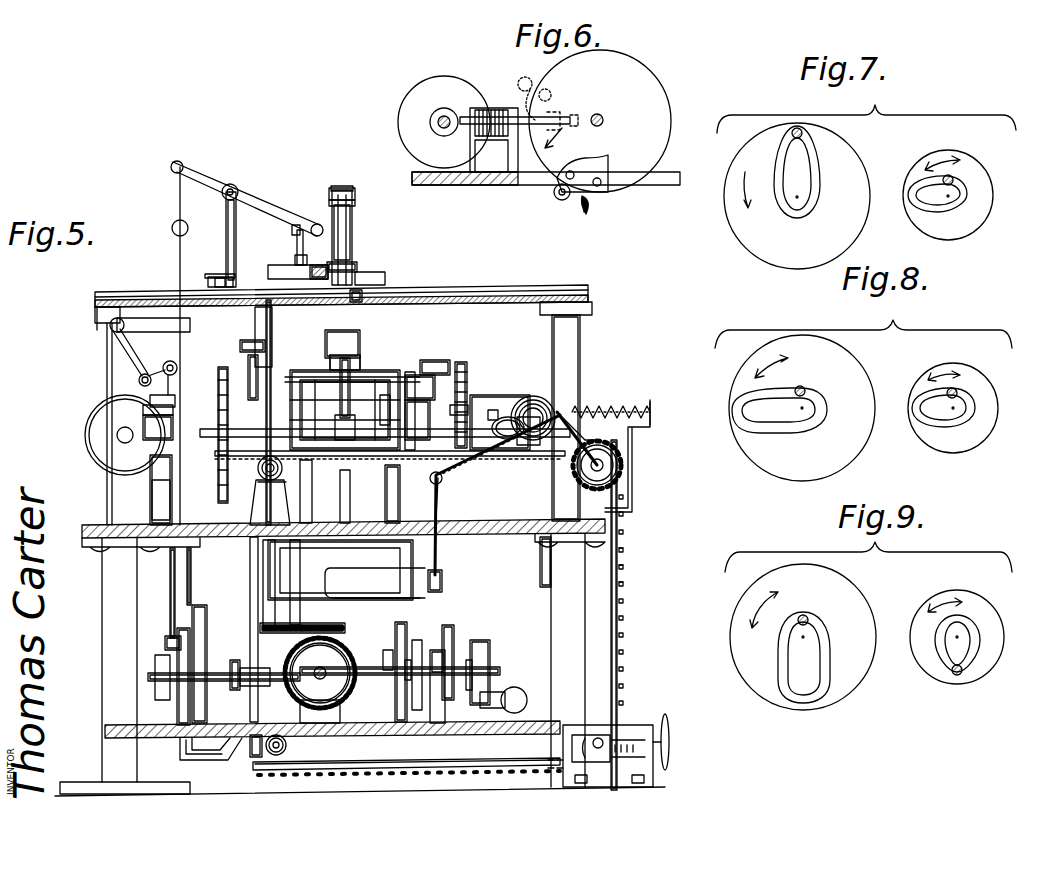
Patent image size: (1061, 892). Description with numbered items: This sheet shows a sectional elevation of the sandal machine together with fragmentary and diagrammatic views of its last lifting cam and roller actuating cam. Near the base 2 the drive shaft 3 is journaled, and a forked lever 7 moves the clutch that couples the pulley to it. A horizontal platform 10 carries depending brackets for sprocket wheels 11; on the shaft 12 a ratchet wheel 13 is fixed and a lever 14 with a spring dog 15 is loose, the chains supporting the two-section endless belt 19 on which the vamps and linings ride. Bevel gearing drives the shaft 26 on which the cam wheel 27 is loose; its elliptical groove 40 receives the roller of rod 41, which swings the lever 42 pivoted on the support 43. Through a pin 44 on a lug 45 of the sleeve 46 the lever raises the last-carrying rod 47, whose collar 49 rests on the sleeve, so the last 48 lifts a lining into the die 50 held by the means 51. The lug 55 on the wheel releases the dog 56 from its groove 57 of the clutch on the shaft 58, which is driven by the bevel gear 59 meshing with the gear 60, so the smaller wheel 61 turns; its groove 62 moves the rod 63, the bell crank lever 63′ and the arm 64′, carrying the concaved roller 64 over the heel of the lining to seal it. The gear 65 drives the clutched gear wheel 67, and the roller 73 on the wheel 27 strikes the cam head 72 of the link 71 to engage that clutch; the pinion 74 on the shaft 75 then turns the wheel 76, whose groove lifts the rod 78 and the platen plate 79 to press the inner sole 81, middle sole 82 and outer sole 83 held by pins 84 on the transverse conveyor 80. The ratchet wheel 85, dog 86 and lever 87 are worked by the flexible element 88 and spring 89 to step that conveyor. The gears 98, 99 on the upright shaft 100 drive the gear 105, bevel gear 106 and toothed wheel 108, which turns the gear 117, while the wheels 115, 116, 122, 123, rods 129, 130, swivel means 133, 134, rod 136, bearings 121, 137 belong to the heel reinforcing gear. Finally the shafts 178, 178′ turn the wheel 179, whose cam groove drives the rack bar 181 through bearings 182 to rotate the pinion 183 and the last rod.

In FIG. 5, the base 2 is at (252, 752).
In FIG. 5, the shaft 3 is at (381, 652).
In FIG. 5, the lever 7 is at (582, 335).
In FIG. 5, the horizontal platform 10 is at (530, 540).
In FIG. 5, the sprocket wheels 11 is at (272, 582).
In FIG. 5, the shaft 12 is at (246, 376).
In FIG. 5, the ratchet wheel 13 is at (222, 396).
In FIG. 5, the lever 14 is at (262, 372).
In FIG. 5, the spring influenced dog 15 is at (272, 362).
In FIG. 5, the endless belt 19 is at (370, 374).
In FIG. 6, the shaft 26 is at (605, 119).
In FIG. 5, the wheel 27 is at (207, 640).
In FIG. 6, the wheel 27 is at (615, 72).
In FIG. 7, the wheel 27 is at (748, 238).
In FIG. 8, the wheel 27 is at (840, 364).
In FIG. 9, the wheel 27 is at (860, 602).
In FIG. 7, the elliptical groove 40 is at (818, 172).
In FIG. 8, the elliptical groove 40 is at (788, 432).
In FIG. 9, the elliptical groove 40 is at (828, 656).
In FIG. 5, the rod 41 is at (192, 604).
In FIG. 7, the rod 41 is at (794, 128).
In FIG. 8, the rod 41 is at (802, 386).
In FIG. 9, the rod 41 is at (806, 616).
In FIG. 5, the lever 42 is at (243, 172).
In FIG. 5, the support 43 is at (237, 246).
In FIG. 5, the pin or roller 44 is at (322, 226).
In FIG. 5, the lug 45 is at (322, 222).
In FIG. 5, the sleeve 46 is at (355, 232).
In FIG. 5, the rod 47 is at (355, 192).
In FIG. 5, the last 48 is at (462, 364).
In FIG. 5, the collar 49 is at (355, 194).
In FIG. 5, the die 50 is at (360, 350).
In FIG. 5, the means 51 is at (362, 346).
In FIG. 6, the lug 55 is at (560, 120).
In FIG. 6, the spring influenced dog or rod 56 is at (548, 110).
In FIG. 5, the groove 57 is at (236, 662).
In FIG. 5, the shaft 58 is at (150, 677).
In FIG. 6, the shaft 58 is at (452, 118).
In FIG. 5, the beveled gear 59 is at (290, 690).
In FIG. 5, the gear 60 is at (318, 722).
In FIG. 5, the wheel 61 is at (182, 642).
In FIG. 6, the wheel 61 is at (430, 98).
In FIG. 7, the wheel 61 is at (990, 192).
In FIG. 8, the wheel 61 is at (990, 416).
In FIG. 9, the wheel 61 is at (992, 654).
In FIG. 7, the elliptical groove 62 is at (960, 208).
In FIG. 8, the elliptical groove 62 is at (955, 424).
In FIG. 9, the elliptical groove 62 is at (972, 634).
In FIG. 5, the rod 63 is at (172, 590).
In FIG. 7, the rod 63 is at (953, 178).
In FIG. 8, the rod 63 is at (958, 390).
In FIG. 9, the rod 63 is at (960, 675).
In FIG. 5, the bell crank lever 63′ is at (115, 338).
In FIG. 5, the concaved roller 64 is at (358, 298).
In FIG. 5, the arm 64′ is at (110, 322).
In FIG. 5, the gear 65 is at (388, 640).
In FIG. 5, the gear wheel 67 is at (456, 630).
In FIG. 5, the link or lever 71 is at (216, 758).
In FIG. 6, the link or lever 71 is at (586, 214).
In FIG. 6, the cam head 72 is at (580, 206).
In FIG. 6, the roller 73 is at (518, 86).
In FIG. 5, the pinion 74 is at (488, 642).
In FIG. 5, the shaft 75 is at (505, 672).
In FIG. 5, the wheel 76 is at (478, 647).
In FIG. 5, the rod 78 is at (445, 582).
In FIG. 5, the platen plate 79 is at (392, 472).
In FIG. 5, the endless conveyor 80 is at (620, 570).
In FIG. 5, the inner sole 81 is at (404, 420).
In FIG. 5, the middle sole 82 is at (405, 392).
In FIG. 5, the outer sole 83 is at (452, 410).
In FIG. 5, the upstanding pins 84 is at (624, 535).
In FIG. 5, the ratchet wheel 85 is at (620, 467).
In FIG. 5, the spring influenced dog 86 is at (575, 452).
In FIG. 5, the lever 87 is at (600, 410).
In FIG. 5, the flexible element 88 is at (462, 472).
In FIG. 5, the spring 89 is at (652, 404).
In FIG. 5, the gear 98 is at (405, 662).
In FIG. 5, the gear 99 is at (440, 626).
In FIG. 5, the upright shaft 100 is at (500, 592).
In FIG. 5, the gear 105 is at (482, 416).
In FIG. 5, the beveled gear 106 is at (472, 396).
In FIG. 5, the toothed wheel 108 is at (140, 380).
In FIG. 5, the wheel 115 is at (122, 422).
In FIG. 5, the wheel 116 is at (560, 420).
In FIG. 5, the gear 117 is at (160, 472).
In FIG. 5, the bearings 121 is at (252, 506).
In FIG. 5, the wheel 122 is at (382, 366).
In FIG. 5, the wheel 123 is at (432, 362).
In FIG. 5, the rod 129 is at (256, 480).
In FIG. 5, the rod 130 is at (408, 482).
In FIG. 5, the swivel means 133 is at (145, 432).
In FIG. 5, the swivel means 134 is at (492, 416).
In FIG. 5, the rod 136 is at (576, 402).
In FIG. 5, the bearings 137 is at (546, 406).
In FIG. 5, the shaft 178 is at (340, 623).
In FIG. 5, the shaft 178′ is at (305, 623).
In FIG. 5, the wheel 179 is at (215, 278).
In FIG. 5, the rack bar 181 is at (312, 265).
In FIG. 5, the bearings 182 is at (300, 228).
In FIG. 5, the pinion 183 is at (360, 262).